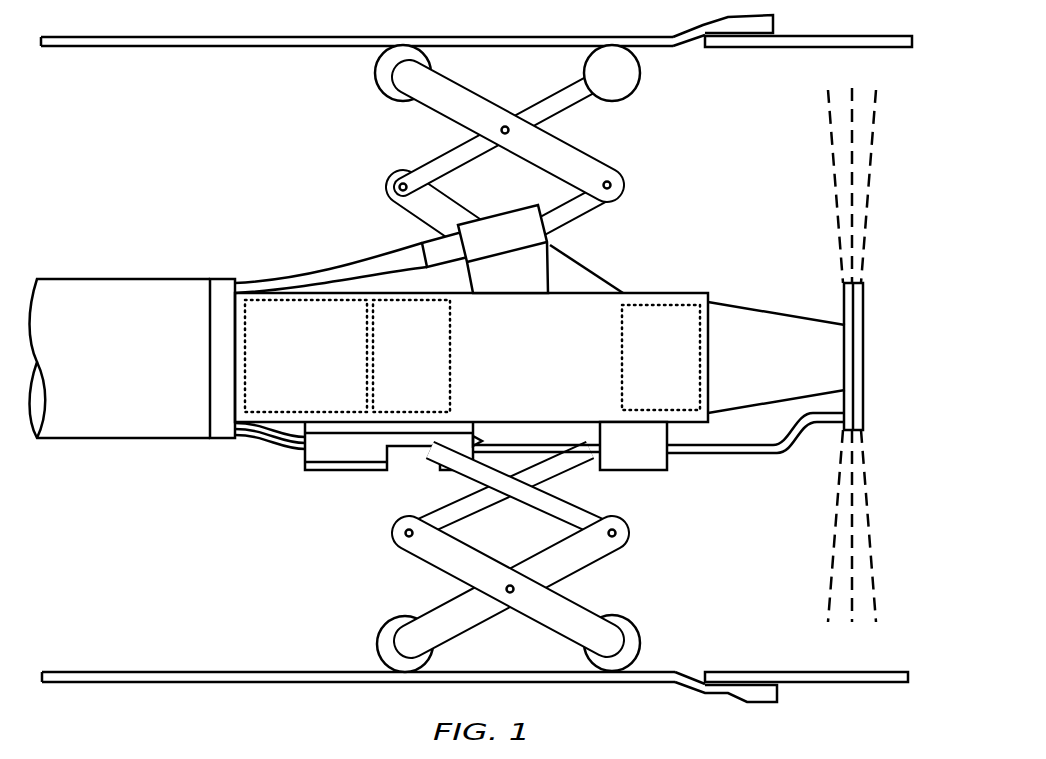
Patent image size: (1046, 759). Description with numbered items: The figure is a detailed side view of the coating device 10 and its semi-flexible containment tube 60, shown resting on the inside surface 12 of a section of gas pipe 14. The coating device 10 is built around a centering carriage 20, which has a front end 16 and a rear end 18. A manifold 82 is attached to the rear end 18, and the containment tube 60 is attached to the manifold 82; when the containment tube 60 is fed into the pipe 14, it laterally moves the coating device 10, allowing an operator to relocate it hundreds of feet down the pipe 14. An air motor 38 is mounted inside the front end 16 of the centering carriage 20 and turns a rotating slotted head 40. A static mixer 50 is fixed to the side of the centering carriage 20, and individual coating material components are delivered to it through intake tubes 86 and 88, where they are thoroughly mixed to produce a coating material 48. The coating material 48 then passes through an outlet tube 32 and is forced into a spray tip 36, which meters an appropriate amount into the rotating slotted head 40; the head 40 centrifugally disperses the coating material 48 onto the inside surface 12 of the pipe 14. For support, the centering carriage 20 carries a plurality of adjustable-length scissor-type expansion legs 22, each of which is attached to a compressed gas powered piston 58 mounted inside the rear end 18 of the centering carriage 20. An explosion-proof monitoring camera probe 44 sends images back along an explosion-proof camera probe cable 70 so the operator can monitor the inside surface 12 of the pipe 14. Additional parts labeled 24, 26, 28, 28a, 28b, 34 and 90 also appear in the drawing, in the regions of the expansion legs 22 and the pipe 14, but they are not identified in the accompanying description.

The coating device 10 is at (219, 157).
The inside surface 12 is at (253, 656).
The pipe 14 is at (476, 350).
The front end 16 is at (540, 318).
The rear end 18 is at (315, 252).
The centering carriage 20 is at (258, 447).
The scissor-type expansion legs 22 is at (482, 561).
The scissor arm 24 is at (432, 112).
The scissor arm 26 is at (538, 92).
The scissor arm 28 is at (422, 217).
The roller 28a is at (368, 72).
The roller 28b is at (610, 100).
The outlet tube 32 is at (583, 456).
The actuator 34 is at (566, 277).
The spray tip 36 is at (735, 455).
The air motor 38 is at (622, 390).
The rotating slotted head 40 is at (863, 335).
The explosion-proof monitoring camera probe 44 is at (548, 218).
The coating material 48 is at (801, 355).
The static mixer 50 is at (375, 472).
The compressed gas powered piston 58 is at (450, 372).
The containment tube 60 is at (110, 278).
The explosion-proof camera probe cable 70 is at (330, 272).
The manifold 82 is at (213, 275).
The intake tube 86 is at (278, 455).
The intake tube 88 is at (298, 455).
The rail joint 90 is at (723, 71).